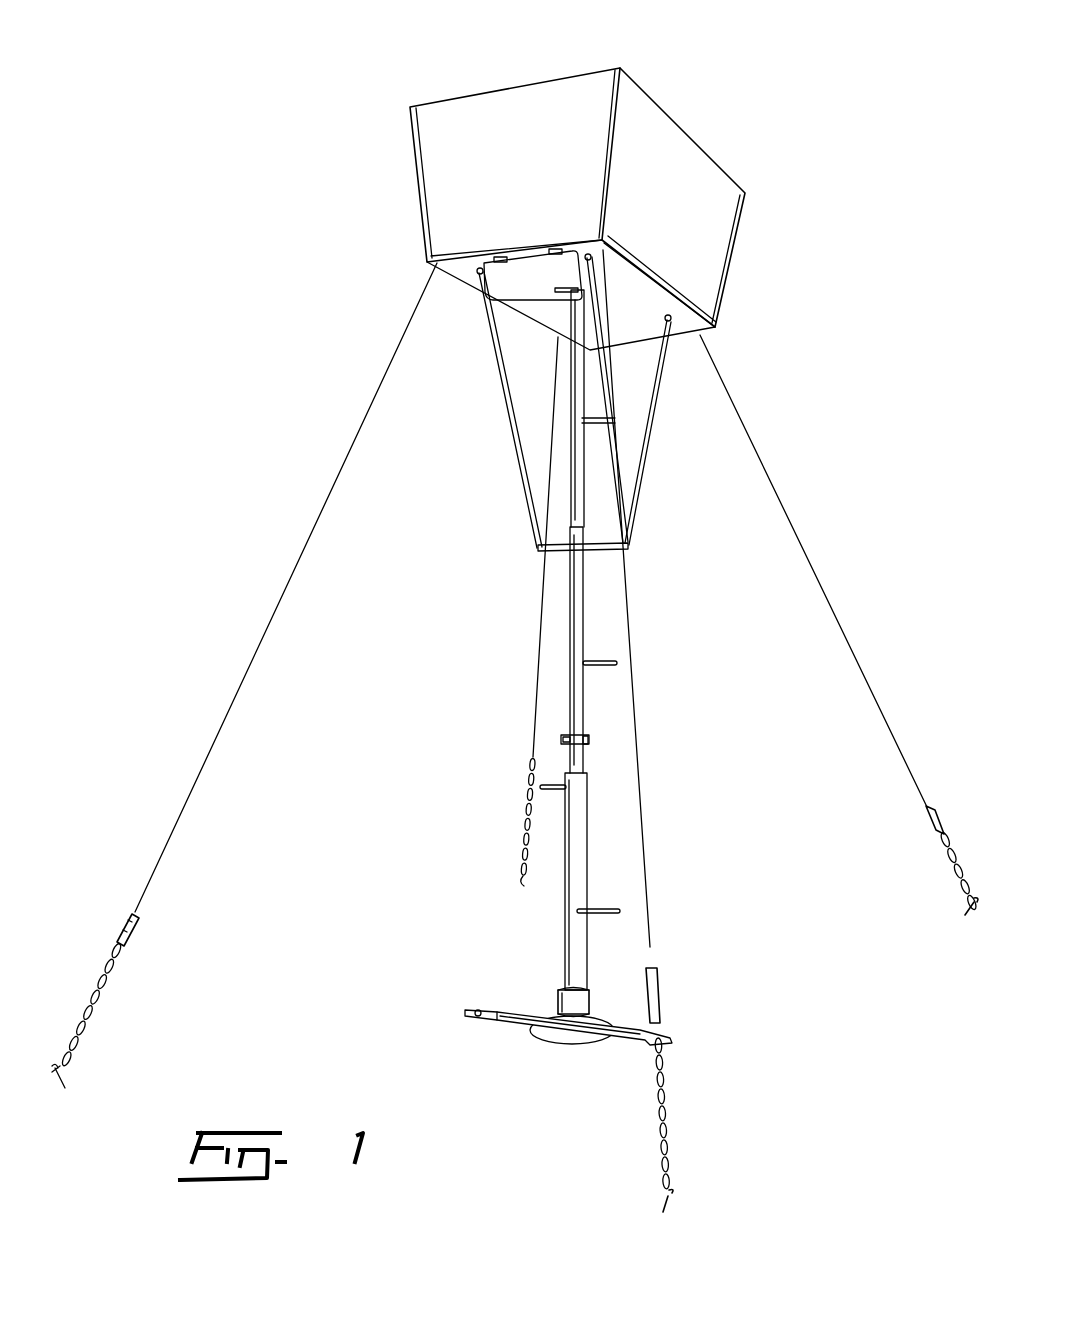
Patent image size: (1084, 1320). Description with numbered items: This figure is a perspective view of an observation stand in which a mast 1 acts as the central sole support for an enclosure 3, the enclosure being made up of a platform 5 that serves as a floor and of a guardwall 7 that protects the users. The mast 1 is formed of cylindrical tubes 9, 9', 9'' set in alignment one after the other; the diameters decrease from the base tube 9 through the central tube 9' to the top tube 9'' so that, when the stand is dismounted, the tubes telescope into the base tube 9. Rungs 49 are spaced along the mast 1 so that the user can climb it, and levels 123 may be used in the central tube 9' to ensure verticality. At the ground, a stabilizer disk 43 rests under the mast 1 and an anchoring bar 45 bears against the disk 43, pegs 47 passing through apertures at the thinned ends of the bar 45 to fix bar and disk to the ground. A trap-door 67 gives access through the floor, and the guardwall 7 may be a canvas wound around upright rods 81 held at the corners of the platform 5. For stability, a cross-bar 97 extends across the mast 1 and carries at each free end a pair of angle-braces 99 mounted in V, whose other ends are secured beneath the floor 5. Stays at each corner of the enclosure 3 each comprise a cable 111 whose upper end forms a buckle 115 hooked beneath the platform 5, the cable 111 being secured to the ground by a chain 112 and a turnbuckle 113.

The mast 1 is at (560, 889).
The enclosure 3 is at (665, 77).
The platform 5 is at (683, 320).
The guardwall 7 is at (708, 264).
The base tube 9 is at (619, 895).
The central tube 9' is at (622, 650).
The top tube 9'' is at (647, 408).
The stabilizer disk 43 is at (553, 1037).
The anchoring bar 45 is at (503, 1018).
The peg 47 is at (478, 1010).
The rung 49 is at (600, 658).
The trap-door 67 is at (527, 277).
The upper rod 81 is at (422, 176).
The cross-bar 97 is at (602, 548).
The angle-brace 99 is at (550, 455).
The cable 111 is at (278, 612).
The chain 112 is at (107, 988).
The turnbuckle 113 is at (130, 933).
The buckle 115 is at (54, 1088).
The level 123 is at (585, 745).